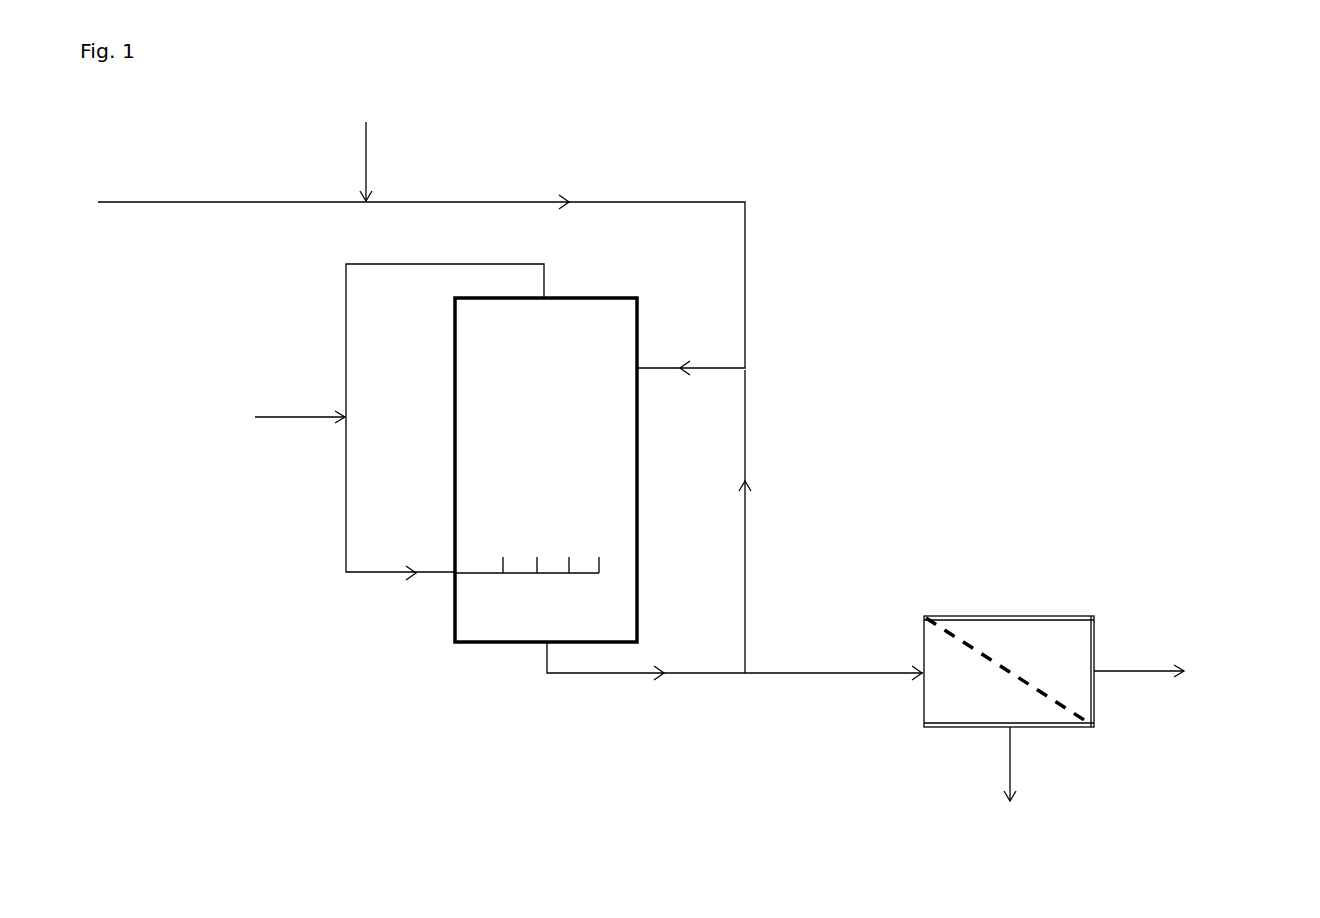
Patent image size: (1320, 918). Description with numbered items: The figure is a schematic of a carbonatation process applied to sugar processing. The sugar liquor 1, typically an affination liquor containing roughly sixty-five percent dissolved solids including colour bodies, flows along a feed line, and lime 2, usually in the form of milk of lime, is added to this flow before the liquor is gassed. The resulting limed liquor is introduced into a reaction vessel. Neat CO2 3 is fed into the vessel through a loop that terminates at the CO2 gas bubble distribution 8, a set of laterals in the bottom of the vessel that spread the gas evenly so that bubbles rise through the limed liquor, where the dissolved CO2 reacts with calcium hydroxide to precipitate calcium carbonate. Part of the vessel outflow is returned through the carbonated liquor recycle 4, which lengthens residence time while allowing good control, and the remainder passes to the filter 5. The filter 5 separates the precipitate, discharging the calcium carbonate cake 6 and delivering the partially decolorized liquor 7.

The sugar liquor 1 is at (467, 244).
The lime 2 is at (380, 143).
The neat CO2 3 is at (319, 422).
The carbonated liquor recycle 4 is at (905, 521).
The filter 5 is at (1009, 650).
The calcium carbonate cake 6 is at (1014, 782).
The partially decolorized liquor 7 is at (1204, 668).
The CO2 gas bubble distribution 8 is at (527, 538).